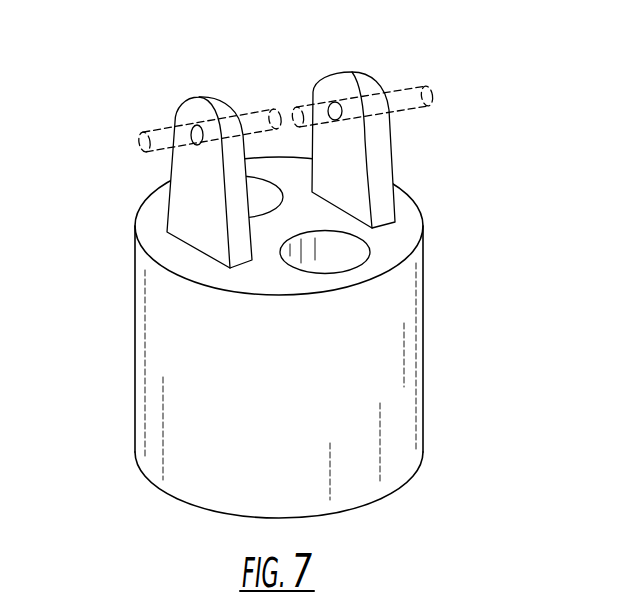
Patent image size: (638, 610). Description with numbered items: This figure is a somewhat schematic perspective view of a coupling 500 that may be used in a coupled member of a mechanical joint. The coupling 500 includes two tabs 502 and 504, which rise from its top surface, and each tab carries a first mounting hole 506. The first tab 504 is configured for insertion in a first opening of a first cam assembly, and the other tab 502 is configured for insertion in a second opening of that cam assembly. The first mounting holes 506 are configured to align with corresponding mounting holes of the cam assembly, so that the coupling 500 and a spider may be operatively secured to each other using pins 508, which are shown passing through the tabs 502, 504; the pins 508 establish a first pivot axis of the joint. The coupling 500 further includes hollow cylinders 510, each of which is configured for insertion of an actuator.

The coupling 500 is at (437, 384).
The tab 502 is at (203, 203).
The first tab 504 is at (390, 132).
The first mounting hole 506 is at (337, 102).
The pin 508 is at (313, 127).
The hollow cylinder 510 is at (285, 196).